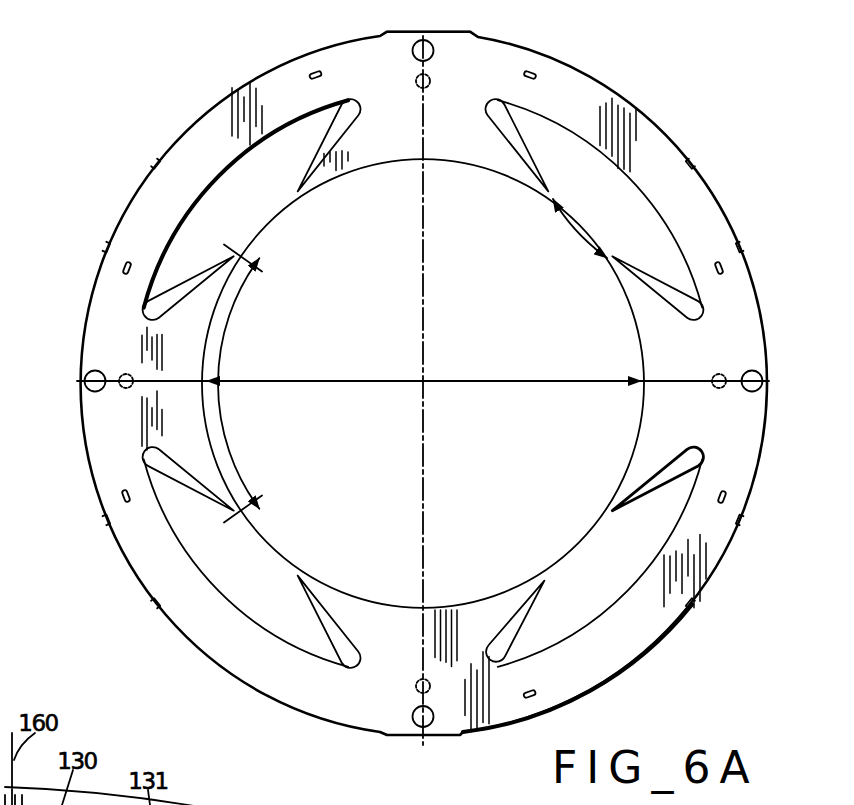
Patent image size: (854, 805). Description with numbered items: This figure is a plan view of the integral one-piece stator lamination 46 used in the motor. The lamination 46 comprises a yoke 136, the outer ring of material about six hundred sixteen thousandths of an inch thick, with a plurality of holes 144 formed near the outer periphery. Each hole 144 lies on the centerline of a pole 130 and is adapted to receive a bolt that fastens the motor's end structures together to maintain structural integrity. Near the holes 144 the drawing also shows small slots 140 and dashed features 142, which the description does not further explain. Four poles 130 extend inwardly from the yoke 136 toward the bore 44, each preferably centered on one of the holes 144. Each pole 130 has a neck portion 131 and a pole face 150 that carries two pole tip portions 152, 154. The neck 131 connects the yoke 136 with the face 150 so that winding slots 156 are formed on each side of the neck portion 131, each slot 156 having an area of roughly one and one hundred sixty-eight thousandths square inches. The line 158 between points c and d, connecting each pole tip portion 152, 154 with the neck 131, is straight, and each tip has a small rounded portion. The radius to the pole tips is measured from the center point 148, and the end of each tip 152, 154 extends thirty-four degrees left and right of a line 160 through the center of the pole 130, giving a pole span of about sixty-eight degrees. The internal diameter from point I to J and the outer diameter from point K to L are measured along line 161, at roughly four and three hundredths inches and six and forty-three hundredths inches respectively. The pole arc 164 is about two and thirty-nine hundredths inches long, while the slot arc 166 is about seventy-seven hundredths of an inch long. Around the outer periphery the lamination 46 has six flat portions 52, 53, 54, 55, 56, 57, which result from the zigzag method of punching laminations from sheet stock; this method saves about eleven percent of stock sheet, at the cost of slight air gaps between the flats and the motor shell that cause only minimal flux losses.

The bore 44 is at (460, 478).
The stator lamination 46 is at (688, 136).
The flat portion 52 is at (397, 28).
The flat portion 53 is at (460, 738).
The flat portion 54 is at (718, 576).
The flat portion 55 is at (716, 192).
The flat portion 56 is at (127, 569).
The flat portion 57 is at (130, 192).
The pole 130 is at (703, 358).
The neck portion 131 is at (699, 340).
The yoke 136 is at (233, 647).
The small slots 140 is at (730, 497).
The hidden holes 142 is at (432, 80).
The holes 144 is at (433, 42).
The center point 148 is at (440, 381).
The pole face 150 is at (641, 384).
The pole tip portion 152 is at (609, 517).
The pole tip portion 154 is at (610, 257).
The slots 156 is at (340, 100).
The line 158 is at (548, 598).
The line 160 is at (431, 197).
The line 161 is at (549, 381).
The pole arc 164 is at (232, 418).
The slot arc 166 is at (575, 226).